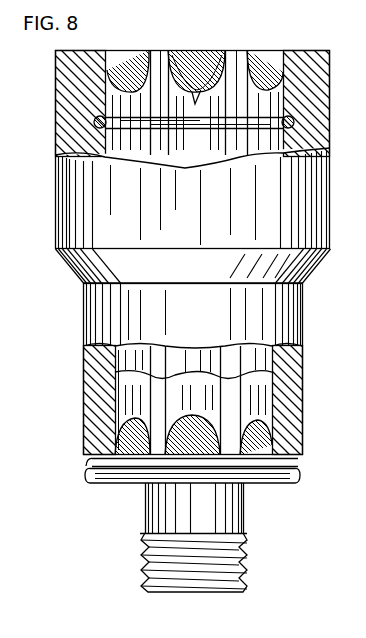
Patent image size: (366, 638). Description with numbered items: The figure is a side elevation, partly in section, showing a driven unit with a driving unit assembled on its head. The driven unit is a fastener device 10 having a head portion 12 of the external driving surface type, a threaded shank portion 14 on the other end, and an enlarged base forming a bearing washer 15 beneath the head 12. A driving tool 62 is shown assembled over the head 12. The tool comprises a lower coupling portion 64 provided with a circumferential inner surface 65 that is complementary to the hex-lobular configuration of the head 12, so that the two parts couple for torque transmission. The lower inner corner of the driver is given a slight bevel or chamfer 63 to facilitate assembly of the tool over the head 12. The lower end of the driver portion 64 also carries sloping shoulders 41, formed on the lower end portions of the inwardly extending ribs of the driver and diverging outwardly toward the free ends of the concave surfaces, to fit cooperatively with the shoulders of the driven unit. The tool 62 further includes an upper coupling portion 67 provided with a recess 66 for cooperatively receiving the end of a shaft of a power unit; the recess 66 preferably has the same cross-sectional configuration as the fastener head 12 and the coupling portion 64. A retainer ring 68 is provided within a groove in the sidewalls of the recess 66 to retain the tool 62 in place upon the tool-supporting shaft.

The fastener device 10 is at (80, 366).
The head portion 12 is at (135, 409).
The threaded shank portion 14 is at (148, 559).
The bearing washer 15 is at (103, 482).
The sloping shoulders 41 is at (127, 58).
The driving tool 62 is at (322, 275).
The chamfer 63 is at (120, 458).
The coupling portion 64 is at (300, 418).
The circumferential inner surface 65 is at (250, 362).
The recess 66 is at (198, 80).
The upper coupling portion 67 is at (322, 192).
The retainer ring 68 is at (92, 122).